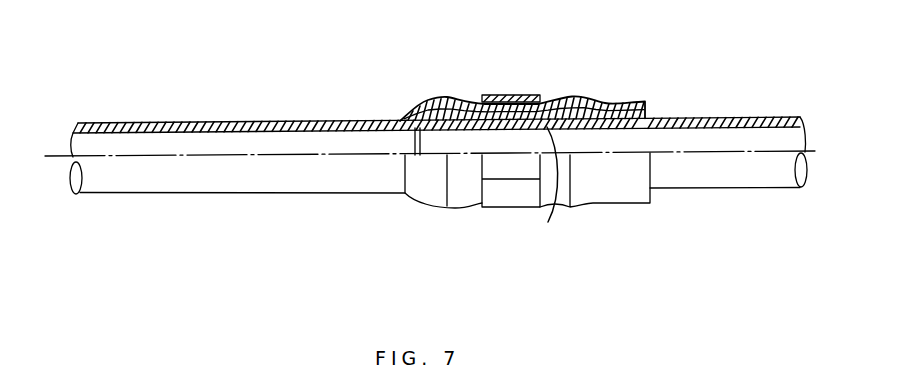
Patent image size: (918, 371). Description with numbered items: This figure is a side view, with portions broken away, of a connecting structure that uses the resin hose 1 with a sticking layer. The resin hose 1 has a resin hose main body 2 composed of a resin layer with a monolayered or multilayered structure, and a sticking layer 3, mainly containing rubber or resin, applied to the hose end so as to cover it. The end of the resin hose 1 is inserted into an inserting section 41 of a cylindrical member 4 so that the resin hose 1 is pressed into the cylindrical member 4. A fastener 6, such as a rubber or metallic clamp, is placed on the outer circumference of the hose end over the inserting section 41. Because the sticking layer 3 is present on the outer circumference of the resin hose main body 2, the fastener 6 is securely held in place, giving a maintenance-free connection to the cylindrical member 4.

The resin hose 1 is at (413, 99).
The resin hose main body 2 is at (200, 122).
The sticking layer 3 is at (616, 101).
The cylindrical member 4 is at (731, 118).
The fastener 6 is at (501, 192).
The inserting section 41 is at (548, 222).